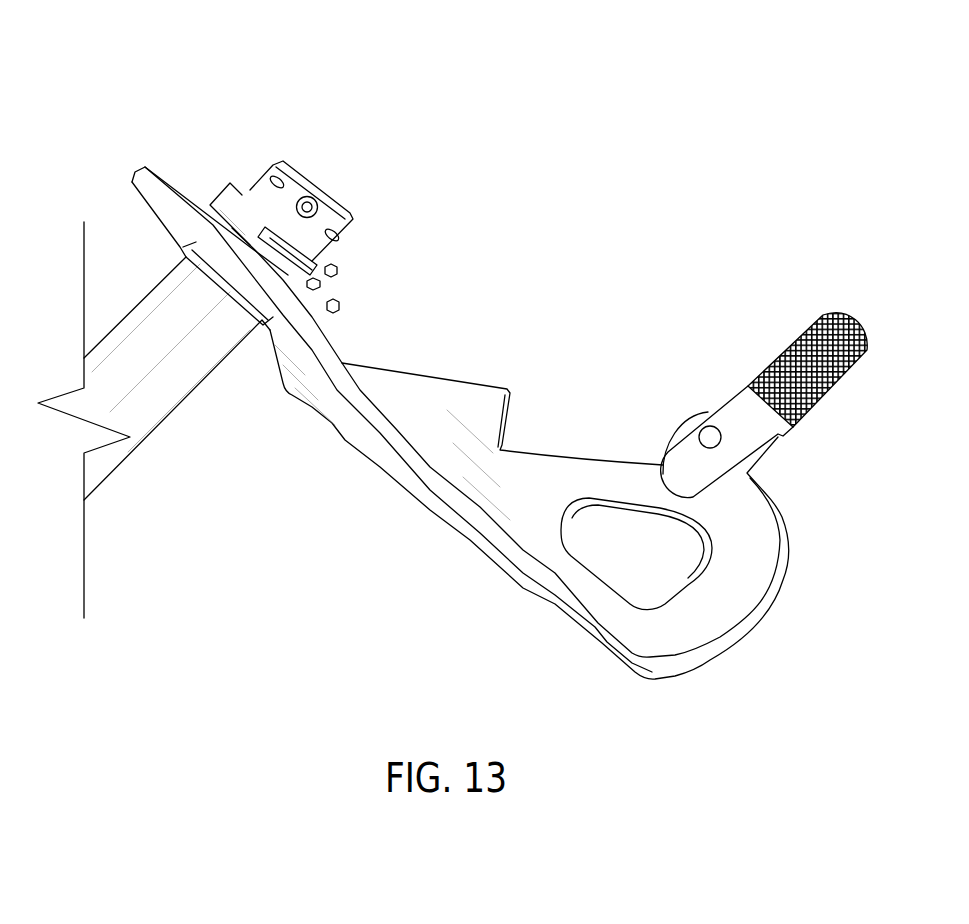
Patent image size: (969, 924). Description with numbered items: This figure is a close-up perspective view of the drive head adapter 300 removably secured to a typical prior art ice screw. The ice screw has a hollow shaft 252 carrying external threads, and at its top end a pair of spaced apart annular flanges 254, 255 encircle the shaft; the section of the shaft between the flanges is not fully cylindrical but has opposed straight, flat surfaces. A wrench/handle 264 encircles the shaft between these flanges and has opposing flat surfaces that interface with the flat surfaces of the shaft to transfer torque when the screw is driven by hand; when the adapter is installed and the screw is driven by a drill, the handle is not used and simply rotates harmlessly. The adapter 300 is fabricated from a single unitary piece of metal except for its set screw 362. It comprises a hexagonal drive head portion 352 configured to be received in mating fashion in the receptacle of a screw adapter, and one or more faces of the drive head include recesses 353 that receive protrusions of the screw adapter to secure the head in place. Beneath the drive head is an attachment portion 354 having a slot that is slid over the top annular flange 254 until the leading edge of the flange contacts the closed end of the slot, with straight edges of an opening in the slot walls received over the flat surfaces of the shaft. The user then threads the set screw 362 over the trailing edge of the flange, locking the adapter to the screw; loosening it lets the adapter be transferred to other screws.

The drive head adapter 300 is at (249, 71).
The hollow shaft 252 is at (185, 387).
The annular flange 255 is at (180, 247).
The attachment portion 354 is at (240, 200).
The drive head portion 352 is at (340, 201).
The recesses 353 is at (311, 203).
The top annular flange 254 is at (302, 277).
The set screw 362 is at (338, 309).
The wrench/handle 264 is at (761, 563).